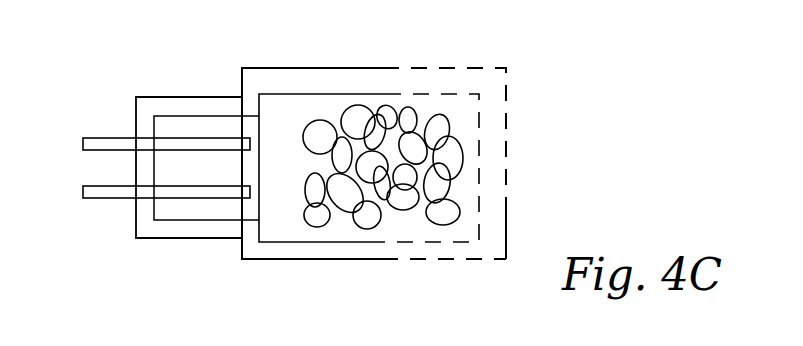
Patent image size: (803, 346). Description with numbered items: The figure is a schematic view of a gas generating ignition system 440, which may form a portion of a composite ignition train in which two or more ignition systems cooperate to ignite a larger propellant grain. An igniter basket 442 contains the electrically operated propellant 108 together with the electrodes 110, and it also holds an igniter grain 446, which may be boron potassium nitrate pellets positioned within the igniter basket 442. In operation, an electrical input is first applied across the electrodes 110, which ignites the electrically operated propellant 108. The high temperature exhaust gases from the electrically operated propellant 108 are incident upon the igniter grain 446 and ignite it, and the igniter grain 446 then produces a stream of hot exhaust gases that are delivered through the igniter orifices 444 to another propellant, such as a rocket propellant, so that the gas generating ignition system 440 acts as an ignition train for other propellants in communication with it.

The electrically operated propellant 108 is at (185, 125).
The electrodes 110 is at (108, 137).
The gas generating ignition system 440 is at (280, 260).
The igniter basket 442 is at (305, 67).
The igniter orifices 444 is at (440, 67).
The igniter grain 446 is at (372, 220).